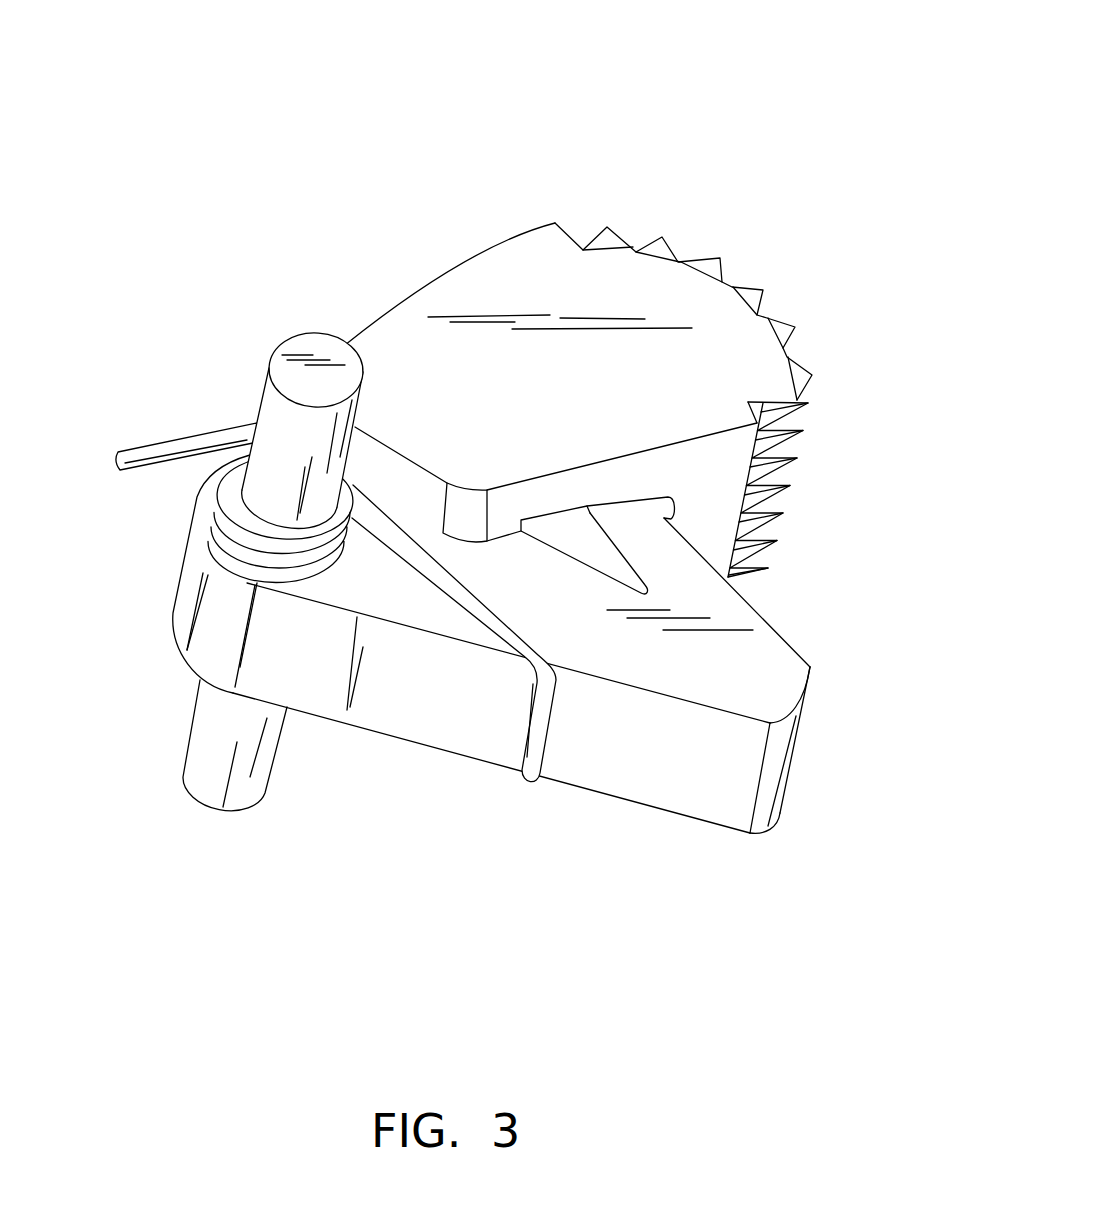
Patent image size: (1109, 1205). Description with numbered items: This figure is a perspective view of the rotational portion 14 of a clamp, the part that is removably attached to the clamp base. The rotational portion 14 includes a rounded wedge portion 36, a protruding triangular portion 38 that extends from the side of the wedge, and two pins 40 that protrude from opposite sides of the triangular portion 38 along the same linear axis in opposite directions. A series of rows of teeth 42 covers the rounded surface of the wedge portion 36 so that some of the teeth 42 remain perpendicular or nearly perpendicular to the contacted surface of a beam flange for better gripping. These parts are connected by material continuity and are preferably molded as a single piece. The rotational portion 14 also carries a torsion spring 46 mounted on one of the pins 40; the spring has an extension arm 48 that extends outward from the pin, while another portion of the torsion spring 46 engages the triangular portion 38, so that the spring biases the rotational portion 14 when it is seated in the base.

The rotational portion 14 is at (552, 492).
The rounded wedge portion 36 is at (578, 408).
The protruding triangular portion 38 is at (683, 798).
The pins 40 is at (267, 397).
The teeth 42 is at (812, 377).
The torsion spring 46 is at (253, 577).
The extension arm 48 is at (135, 458).